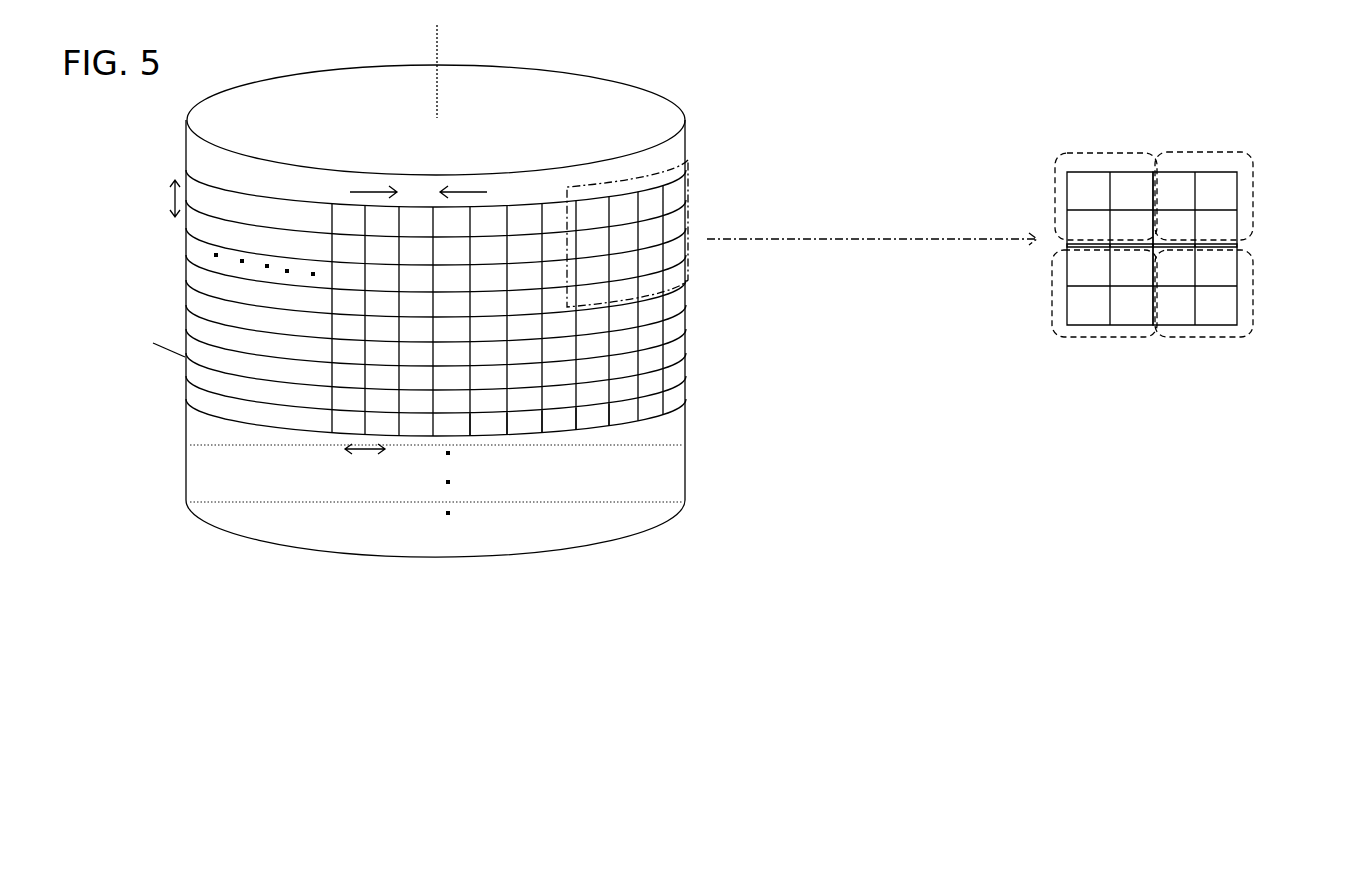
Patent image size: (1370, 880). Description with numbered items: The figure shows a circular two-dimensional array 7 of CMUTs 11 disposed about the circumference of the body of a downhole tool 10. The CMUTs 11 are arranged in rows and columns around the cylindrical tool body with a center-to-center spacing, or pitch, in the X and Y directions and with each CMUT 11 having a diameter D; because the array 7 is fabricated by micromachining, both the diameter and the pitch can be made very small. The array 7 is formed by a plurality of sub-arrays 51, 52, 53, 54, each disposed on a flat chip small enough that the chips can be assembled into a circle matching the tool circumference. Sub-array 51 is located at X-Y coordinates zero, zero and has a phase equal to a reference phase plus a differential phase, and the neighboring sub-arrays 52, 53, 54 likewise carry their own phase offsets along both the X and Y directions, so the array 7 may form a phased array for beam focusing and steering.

The downhole tool 10 is at (683, 127).
The array 7 is at (642, 458).
The CMUT 11 is at (485, 422).
The sub-array 51 is at (1215, 152).
The sub-array 52 is at (1240, 333).
The sub-array 53 is at (1060, 169).
The sub-array 54 is at (1067, 331).